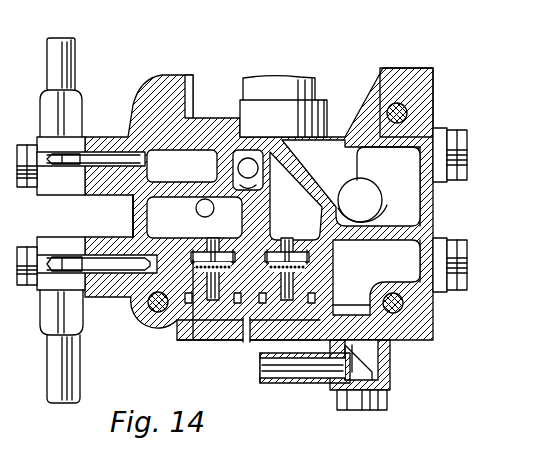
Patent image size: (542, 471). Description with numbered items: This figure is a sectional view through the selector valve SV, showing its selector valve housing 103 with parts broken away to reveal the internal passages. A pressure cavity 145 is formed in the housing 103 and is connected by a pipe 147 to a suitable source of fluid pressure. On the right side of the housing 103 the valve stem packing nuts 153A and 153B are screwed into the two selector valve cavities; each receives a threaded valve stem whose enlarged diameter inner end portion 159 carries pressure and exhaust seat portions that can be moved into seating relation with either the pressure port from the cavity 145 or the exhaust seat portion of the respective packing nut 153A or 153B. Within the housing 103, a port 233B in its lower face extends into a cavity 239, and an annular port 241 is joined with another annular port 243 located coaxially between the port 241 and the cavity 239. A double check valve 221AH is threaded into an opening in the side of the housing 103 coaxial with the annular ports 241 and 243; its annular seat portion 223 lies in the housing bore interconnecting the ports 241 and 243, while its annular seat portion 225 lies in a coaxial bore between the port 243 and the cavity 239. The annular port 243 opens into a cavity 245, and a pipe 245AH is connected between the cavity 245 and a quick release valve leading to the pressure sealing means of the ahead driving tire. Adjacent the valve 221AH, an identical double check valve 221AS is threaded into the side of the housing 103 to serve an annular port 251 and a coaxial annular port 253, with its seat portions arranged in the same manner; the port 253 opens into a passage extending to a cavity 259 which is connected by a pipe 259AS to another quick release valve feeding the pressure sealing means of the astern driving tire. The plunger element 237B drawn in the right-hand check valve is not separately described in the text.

The pipe 259AS is at (77, 56).
The cavity 259 is at (137, 133).
The cavity 239 is at (147, 218).
The port 233B is at (205, 199).
The annular seat portion 225 is at (220, 243).
The valve plunger 237B is at (317, 257).
The annular port 243 is at (93, 268).
The cavity 245 is at (78, 322).
The pipe 245AH is at (67, 373).
The annular port 241 is at (161, 318).
The double check valve 221AH is at (188, 341).
The annular seat portion 223 is at (217, 320).
The double check valve 221AS is at (262, 343).
The pipe 147 is at (280, 384).
The selector valve SV is at (383, 110).
The valve stem packing nut 153A is at (460, 133).
The pressure cavity 145 is at (413, 204).
The valve stem packing nut 153B is at (467, 252).
The annular port 253 is at (373, 242).
The annular port 251 is at (371, 301).
The selector valve housing 103 is at (432, 305).
The enlarged diameter inner end portion 159 is at (388, 340).